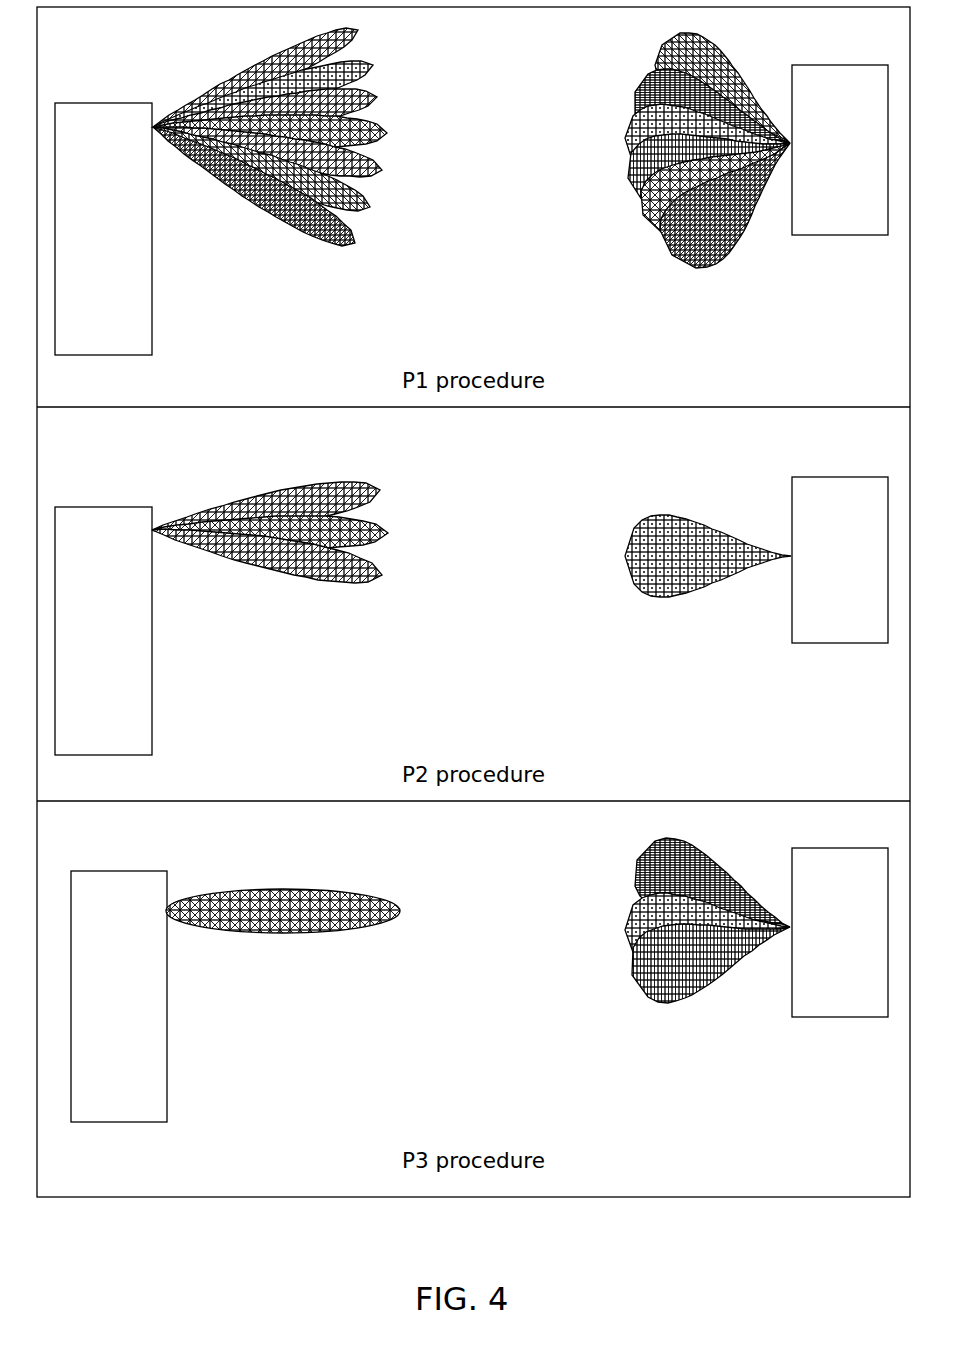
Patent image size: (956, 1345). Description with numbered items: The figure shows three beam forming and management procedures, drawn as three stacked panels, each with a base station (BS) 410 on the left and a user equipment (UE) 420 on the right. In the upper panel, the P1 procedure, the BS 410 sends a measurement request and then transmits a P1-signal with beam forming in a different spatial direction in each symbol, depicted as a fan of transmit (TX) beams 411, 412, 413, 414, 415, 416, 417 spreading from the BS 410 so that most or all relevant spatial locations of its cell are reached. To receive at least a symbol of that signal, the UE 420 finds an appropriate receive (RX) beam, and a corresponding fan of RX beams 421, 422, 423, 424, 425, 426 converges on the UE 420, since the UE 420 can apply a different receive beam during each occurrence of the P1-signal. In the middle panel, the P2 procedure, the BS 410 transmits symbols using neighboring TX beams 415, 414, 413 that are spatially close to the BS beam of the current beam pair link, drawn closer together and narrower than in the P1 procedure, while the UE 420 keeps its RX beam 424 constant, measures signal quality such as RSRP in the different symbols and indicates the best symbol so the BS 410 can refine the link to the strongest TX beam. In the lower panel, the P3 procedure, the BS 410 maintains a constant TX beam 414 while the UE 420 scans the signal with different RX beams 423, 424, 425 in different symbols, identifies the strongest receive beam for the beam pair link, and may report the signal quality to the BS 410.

The base station 410 is at (130, 103).
The transmit beam 411 is at (355, 241).
The transmit beam 412 is at (373, 203).
The transmit beam 413 is at (380, 165).
The transmit beam 414 is at (380, 123).
The transmit beam 415 is at (375, 87).
The transmit beam 416 is at (373, 57).
The transmit beam 417 is at (281, 49).
The user equipment 420 is at (818, 65).
The receive beam 421 is at (667, 250).
The receive beam 422 is at (643, 220).
The receive beam 423 is at (628, 192).
The receive beam 424 is at (628, 152).
The receive beam 425 is at (632, 98).
The receive beam 426 is at (655, 57).